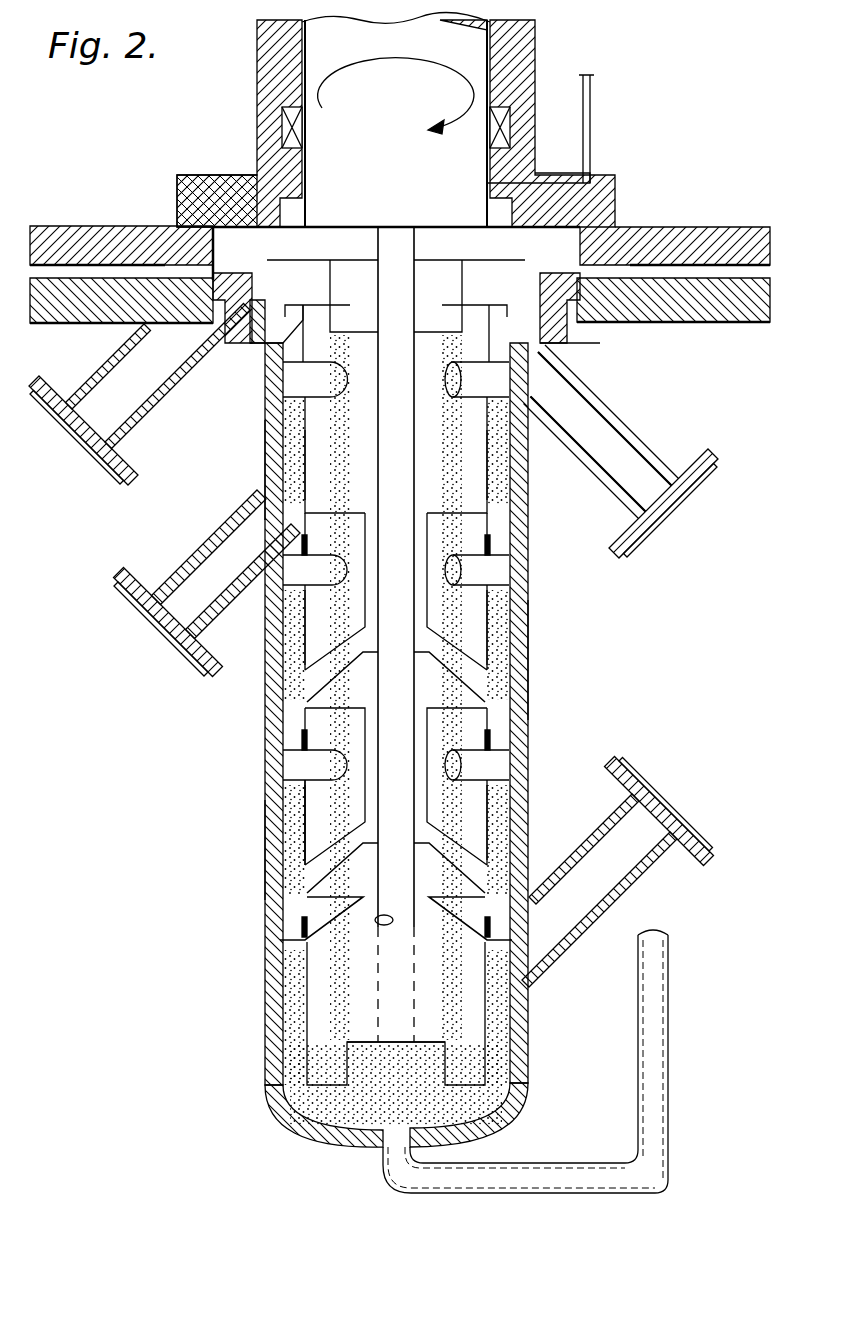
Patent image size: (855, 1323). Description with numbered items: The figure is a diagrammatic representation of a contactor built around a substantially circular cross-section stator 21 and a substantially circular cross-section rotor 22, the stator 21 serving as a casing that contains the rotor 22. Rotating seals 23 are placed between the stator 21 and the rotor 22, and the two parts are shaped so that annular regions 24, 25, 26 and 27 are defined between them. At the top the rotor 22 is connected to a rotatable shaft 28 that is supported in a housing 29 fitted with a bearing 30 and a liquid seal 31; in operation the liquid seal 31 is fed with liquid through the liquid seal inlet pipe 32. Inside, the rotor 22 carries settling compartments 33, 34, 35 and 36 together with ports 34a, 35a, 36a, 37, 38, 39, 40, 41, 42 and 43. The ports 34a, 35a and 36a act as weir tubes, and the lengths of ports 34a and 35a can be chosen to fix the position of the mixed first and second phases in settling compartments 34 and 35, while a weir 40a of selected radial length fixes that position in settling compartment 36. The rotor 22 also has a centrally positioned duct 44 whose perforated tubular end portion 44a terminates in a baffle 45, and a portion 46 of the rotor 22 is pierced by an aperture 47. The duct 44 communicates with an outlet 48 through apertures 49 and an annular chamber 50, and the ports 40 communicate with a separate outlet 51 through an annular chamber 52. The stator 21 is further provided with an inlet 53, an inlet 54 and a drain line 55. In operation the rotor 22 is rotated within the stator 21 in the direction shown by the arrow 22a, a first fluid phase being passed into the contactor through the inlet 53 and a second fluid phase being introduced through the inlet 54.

The stator 21 is at (265, 730).
The rotor 22 is at (272, 840).
The arrow 22a is at (440, 62).
The rotating seals 23 is at (245, 945).
The annular region 24 is at (520, 1075).
The annular region 25 is at (300, 790).
The annular region 26 is at (527, 655).
The annular region 27 is at (290, 460).
The rotatable shaft 28 is at (470, 52).
The housing 29 is at (705, 237).
The bearing 30 is at (282, 118).
The liquid seal 31 is at (517, 187).
The liquid seal inlet pipe 32 is at (590, 97).
The settling compartment 33 is at (470, 1025).
The settling compartment 34 is at (455, 810).
The port 34a is at (300, 762).
The settling compartment 35 is at (455, 625).
The port 35a is at (290, 600).
The settling compartment 36 is at (490, 520).
The port 36a is at (300, 425).
The port 37 is at (298, 925).
The port 38 is at (300, 722).
The port 39 is at (320, 520).
The ports 40 is at (360, 315).
The weir 40a is at (265, 245).
The port 41 is at (315, 960).
The port 42 is at (300, 880).
The port 43 is at (320, 690).
The duct 44 is at (378, 922).
The perforated tubular end portion 44a is at (370, 1005).
The baffle 45 is at (345, 1060).
The portion of the rotor 46 is at (490, 1105).
The aperture 47 is at (360, 1105).
The outlet 48 is at (100, 455).
The apertures 49 is at (305, 250).
The annular chamber 50 is at (215, 205).
The outlet 51 is at (700, 487).
The annular chamber 52 is at (250, 350).
The inlet 53 is at (660, 800).
The inlet 54 is at (175, 650).
The drain line 55 is at (668, 968).